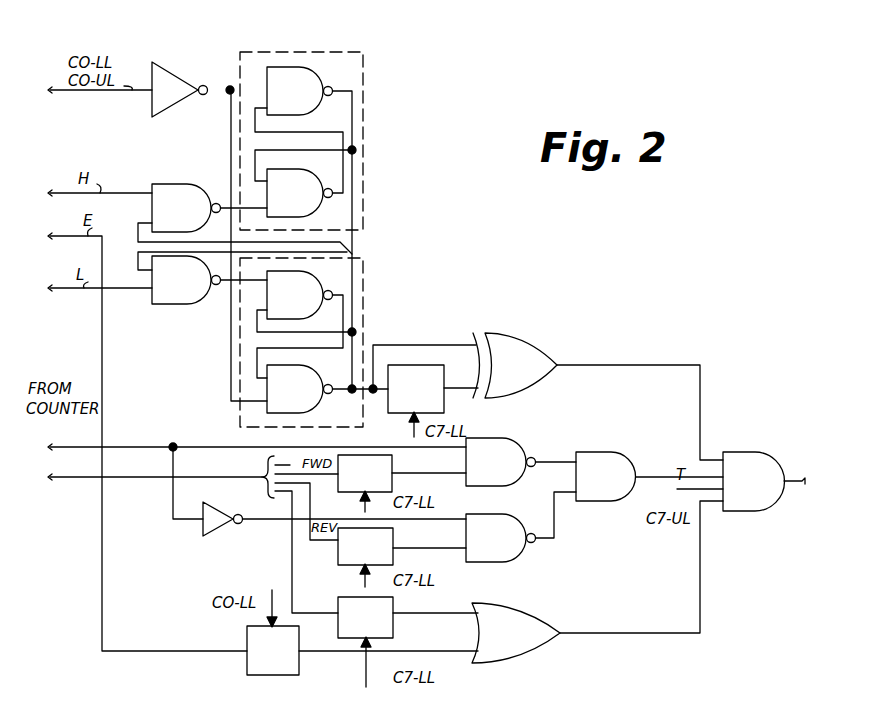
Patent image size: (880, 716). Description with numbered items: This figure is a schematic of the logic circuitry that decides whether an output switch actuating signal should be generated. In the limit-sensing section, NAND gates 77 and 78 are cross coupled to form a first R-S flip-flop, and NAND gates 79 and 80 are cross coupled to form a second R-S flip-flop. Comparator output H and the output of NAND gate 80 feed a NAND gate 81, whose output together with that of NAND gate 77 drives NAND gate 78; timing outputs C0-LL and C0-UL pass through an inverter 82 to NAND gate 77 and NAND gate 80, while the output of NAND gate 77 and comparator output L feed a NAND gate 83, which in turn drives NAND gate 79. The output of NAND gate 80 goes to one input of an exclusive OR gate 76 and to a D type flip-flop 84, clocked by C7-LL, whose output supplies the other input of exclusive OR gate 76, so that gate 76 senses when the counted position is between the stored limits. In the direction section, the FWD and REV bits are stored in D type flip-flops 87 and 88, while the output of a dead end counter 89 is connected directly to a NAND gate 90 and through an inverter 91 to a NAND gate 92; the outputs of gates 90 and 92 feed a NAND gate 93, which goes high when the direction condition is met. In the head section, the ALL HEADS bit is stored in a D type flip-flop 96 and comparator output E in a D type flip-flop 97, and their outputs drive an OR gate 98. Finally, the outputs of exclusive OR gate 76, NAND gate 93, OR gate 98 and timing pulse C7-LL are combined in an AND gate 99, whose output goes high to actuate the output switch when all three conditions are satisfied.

The exclusive OR gate 76 is at (509, 339).
The NAND gate 77 is at (300, 67).
The NAND gate 78 is at (333, 186).
The NAND gate 79 is at (330, 287).
The NAND gate 80 is at (275, 408).
The NAND gate 81 is at (186, 166).
The inverter 82 is at (183, 44).
The NAND gate 83 is at (170, 304).
The D type flip-flop 84 is at (425, 365).
The D type flip-flop 87 is at (395, 465).
The D type flip-flop 88 is at (396, 537).
The dead end counter 89 is at (72, 440).
The NAND gate 90 is at (515, 447).
The inverter 91 is at (204, 537).
The NAND gate 92 is at (518, 559).
The NAND gate 93 is at (605, 501).
The D type flip-flop 96 is at (396, 634).
The D type flip-flop 97 is at (250, 678).
The OR gate 98 is at (516, 612).
The AND gate 99 is at (767, 442).